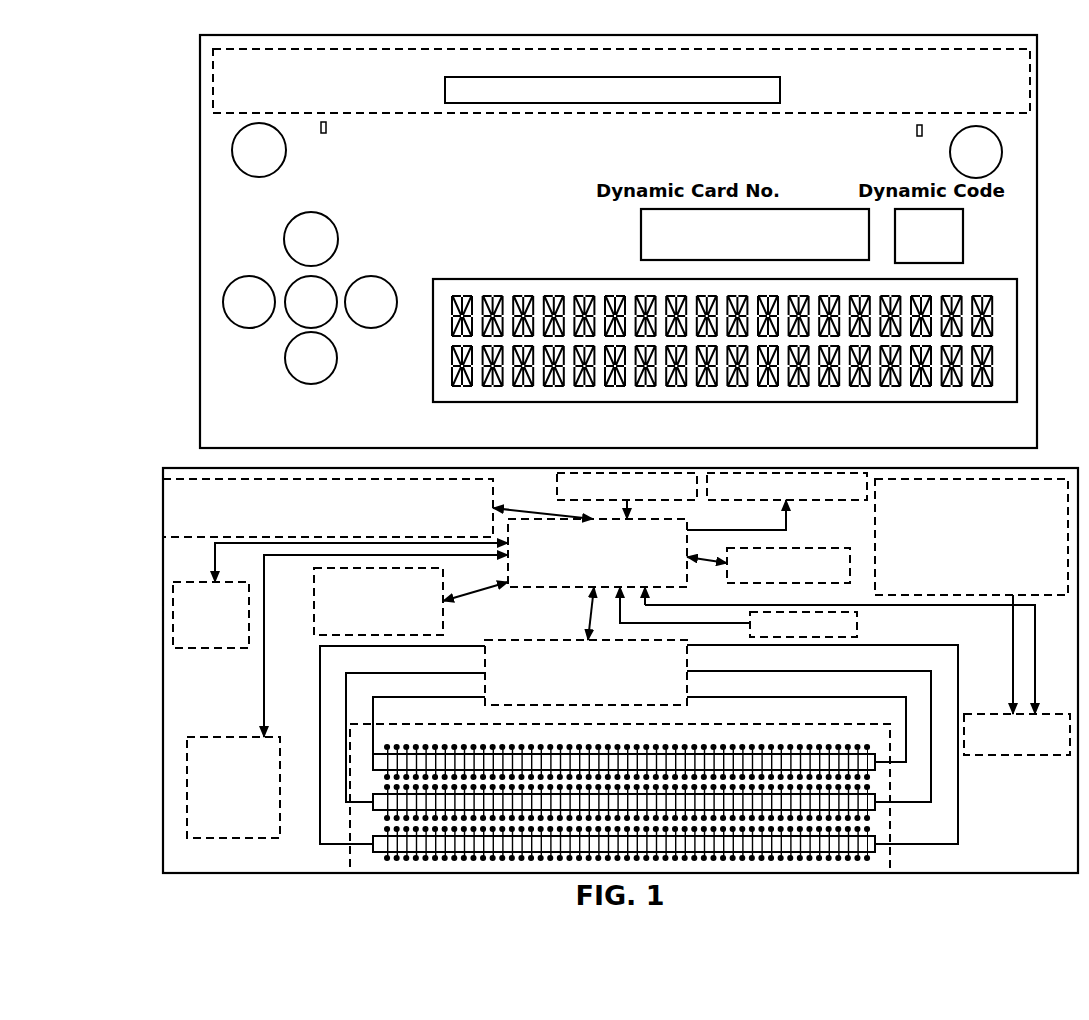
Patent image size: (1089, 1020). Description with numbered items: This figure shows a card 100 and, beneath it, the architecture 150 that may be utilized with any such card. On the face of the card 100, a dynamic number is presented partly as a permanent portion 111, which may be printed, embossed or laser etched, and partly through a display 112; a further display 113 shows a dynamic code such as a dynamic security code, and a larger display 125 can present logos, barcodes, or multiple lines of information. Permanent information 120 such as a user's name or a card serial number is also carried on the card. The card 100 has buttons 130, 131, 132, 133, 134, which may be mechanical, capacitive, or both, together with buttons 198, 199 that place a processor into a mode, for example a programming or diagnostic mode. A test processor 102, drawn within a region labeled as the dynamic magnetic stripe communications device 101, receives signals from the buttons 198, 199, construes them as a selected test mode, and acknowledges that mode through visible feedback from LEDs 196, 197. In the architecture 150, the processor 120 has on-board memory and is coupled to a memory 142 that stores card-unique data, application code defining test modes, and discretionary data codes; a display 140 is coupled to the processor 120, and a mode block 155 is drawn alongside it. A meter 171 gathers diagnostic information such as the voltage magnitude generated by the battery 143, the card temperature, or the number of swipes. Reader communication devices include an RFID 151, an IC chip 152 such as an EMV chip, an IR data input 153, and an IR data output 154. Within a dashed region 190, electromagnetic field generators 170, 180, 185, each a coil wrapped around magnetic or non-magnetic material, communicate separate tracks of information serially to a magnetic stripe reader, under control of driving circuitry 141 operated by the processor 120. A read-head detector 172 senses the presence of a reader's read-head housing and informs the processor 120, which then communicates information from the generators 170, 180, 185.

The card 100 is at (200, 245).
The dynamic magnetic stripe communications device 101 is at (213, 104).
The test processor 102 is at (445, 92).
The permanent portion 111 is at (566, 250).
The display 112 is at (702, 262).
The display 113 is at (946, 262).
The permanent information / processor 120 is at (254, 416).
The display 125 is at (1012, 403).
The button 130 is at (304, 276).
The button 131 is at (250, 276).
The button 132 is at (397, 302).
The button 133 is at (311, 212).
The button 134 is at (285, 360).
The display 140 is at (784, 584).
The driving circuitry 141 is at (525, 640).
The memory 142 is at (163, 488).
The battery 143 is at (1066, 592).
The architecture 150 is at (163, 668).
The RFID 151 is at (320, 595).
The IC chip 152 is at (210, 582).
The IR data input 153 is at (690, 500).
The IR data output 154 is at (861, 500).
The mode 155 is at (857, 618).
The electromagnetic field generator 170 is at (505, 746).
The meter 171 is at (1058, 757).
The read-head detector 172 is at (244, 840).
The electromagnetic field generator 180 is at (378, 796).
The electromagnetic field generator 185 is at (378, 836).
The dynamic magnetic stripe communications device 190 is at (820, 724).
The LED 196 is at (326, 127).
The LED 197 is at (917, 130).
The button 198 is at (286, 148).
The button 199 is at (950, 150).